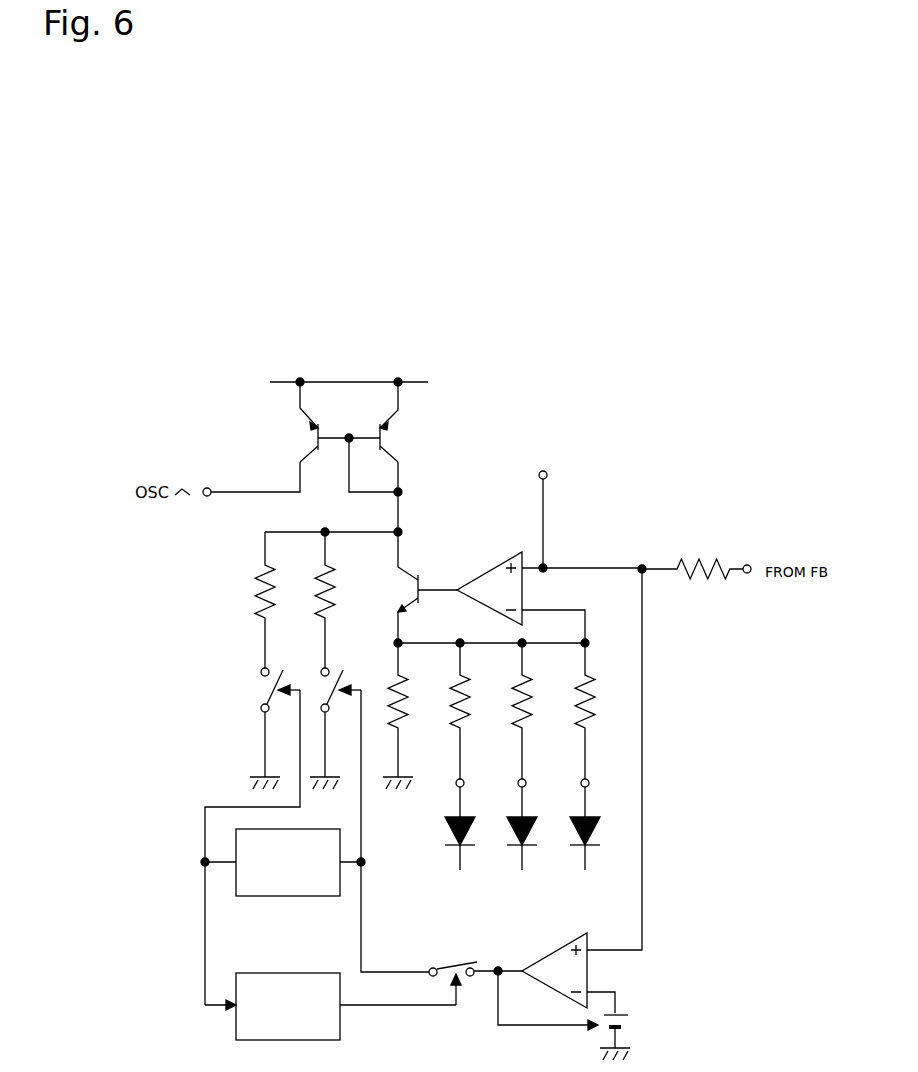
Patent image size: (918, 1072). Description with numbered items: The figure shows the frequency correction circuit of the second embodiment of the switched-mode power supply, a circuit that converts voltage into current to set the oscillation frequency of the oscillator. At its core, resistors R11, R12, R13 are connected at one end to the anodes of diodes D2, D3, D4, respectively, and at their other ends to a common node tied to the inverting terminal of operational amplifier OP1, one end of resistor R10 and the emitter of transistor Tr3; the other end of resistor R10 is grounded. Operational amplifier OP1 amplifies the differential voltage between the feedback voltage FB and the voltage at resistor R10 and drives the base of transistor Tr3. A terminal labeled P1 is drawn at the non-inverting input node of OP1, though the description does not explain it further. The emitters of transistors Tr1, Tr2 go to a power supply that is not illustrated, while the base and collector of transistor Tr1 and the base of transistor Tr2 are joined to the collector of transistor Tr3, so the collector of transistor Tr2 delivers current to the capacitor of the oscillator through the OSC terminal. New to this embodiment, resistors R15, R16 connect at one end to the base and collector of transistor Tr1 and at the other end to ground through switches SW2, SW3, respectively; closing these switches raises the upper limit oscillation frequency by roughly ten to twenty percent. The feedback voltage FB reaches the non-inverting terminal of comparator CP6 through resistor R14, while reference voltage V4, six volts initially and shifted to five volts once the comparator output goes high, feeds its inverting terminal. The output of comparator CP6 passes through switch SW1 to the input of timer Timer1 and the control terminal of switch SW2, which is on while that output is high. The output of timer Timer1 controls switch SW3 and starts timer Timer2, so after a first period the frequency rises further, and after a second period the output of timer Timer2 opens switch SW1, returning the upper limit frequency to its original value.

The transistor Tr1 is at (407, 422).
The transistor Tr2 is at (290, 422).
The transistor Tr3 is at (409, 587).
The resistor R10 is at (413, 716).
The resistor R11 is at (603, 715).
The resistor R12 is at (540, 715).
The resistor R13 is at (478, 715).
The resistor R14 is at (696, 555).
The resistor R15 is at (344, 600).
The resistor R16 is at (282, 600).
The diode D2 is at (596, 831).
The diode D3 is at (533, 831).
The diode D4 is at (471, 831).
The switch SW1 is at (441, 971).
The switch SW2 is at (344, 718).
The switch SW3 is at (251, 718).
The operational amplifier OP1 is at (490, 565).
The comparator CP6 is at (552, 950).
The terminal P1 is at (558, 516).
The reference voltage V4 is at (669, 1037).
The timer Timer1 is at (283, 862).
The timer Timer2 is at (330, 1006).